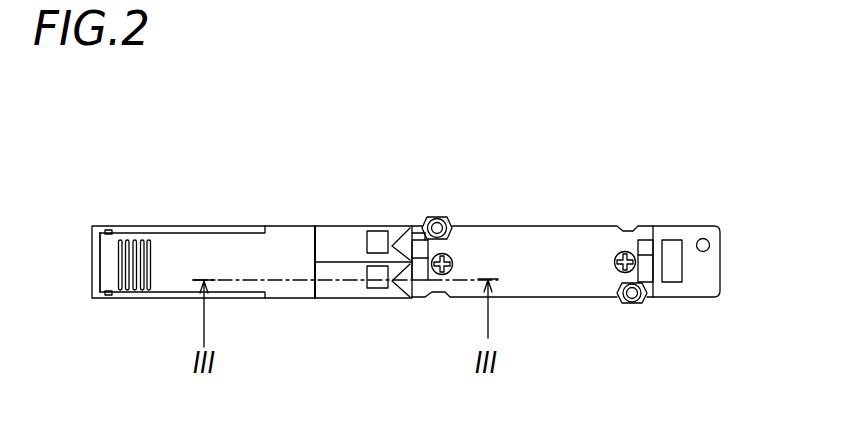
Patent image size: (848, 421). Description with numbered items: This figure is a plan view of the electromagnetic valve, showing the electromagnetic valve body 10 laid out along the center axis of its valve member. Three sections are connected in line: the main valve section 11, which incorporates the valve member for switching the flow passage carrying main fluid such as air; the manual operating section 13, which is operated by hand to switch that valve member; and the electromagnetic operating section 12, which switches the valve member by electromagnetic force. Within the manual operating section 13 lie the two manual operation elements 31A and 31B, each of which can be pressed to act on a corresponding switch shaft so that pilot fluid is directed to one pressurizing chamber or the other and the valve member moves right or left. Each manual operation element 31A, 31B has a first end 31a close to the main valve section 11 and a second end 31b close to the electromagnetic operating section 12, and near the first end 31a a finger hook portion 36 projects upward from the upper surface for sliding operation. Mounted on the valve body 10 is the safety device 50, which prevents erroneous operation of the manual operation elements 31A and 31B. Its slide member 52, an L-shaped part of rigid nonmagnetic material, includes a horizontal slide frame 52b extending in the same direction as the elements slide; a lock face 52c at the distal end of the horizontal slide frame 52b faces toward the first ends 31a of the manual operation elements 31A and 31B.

The electromagnetic valve body 10 is at (566, 190).
The main valve section 11 is at (608, 178).
The electromagnetic operating section 12 is at (183, 168).
The manual operating section 13 is at (400, 182).
The manual operation element 31A is at (347, 243).
The manual operation element 31B is at (340, 287).
The first end 31a is at (453, 215).
The second end 31b is at (315, 248).
The finger hook portion 36 is at (408, 226).
The safety device 50 is at (182, 352).
The slide member 52 is at (94, 337).
The horizontal slide frame 52b is at (131, 211).
The lock face 52c is at (328, 226).